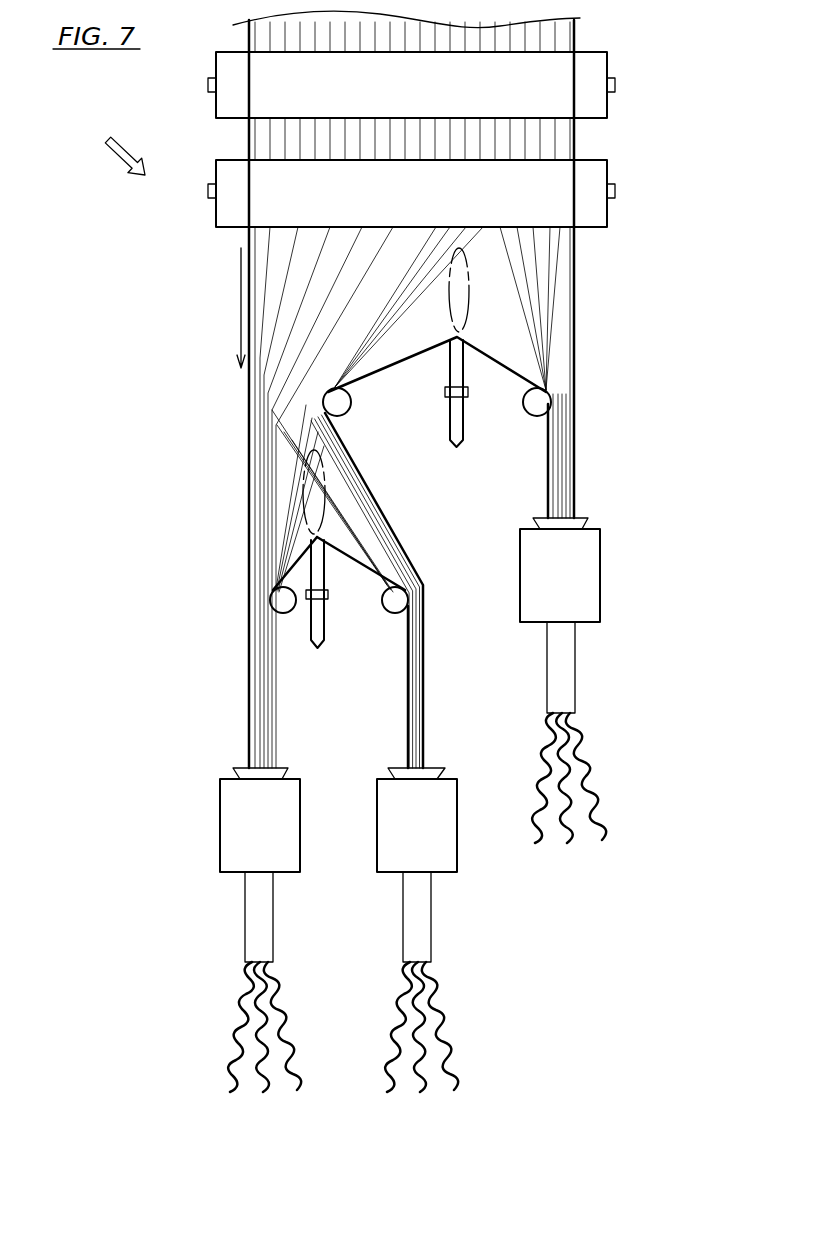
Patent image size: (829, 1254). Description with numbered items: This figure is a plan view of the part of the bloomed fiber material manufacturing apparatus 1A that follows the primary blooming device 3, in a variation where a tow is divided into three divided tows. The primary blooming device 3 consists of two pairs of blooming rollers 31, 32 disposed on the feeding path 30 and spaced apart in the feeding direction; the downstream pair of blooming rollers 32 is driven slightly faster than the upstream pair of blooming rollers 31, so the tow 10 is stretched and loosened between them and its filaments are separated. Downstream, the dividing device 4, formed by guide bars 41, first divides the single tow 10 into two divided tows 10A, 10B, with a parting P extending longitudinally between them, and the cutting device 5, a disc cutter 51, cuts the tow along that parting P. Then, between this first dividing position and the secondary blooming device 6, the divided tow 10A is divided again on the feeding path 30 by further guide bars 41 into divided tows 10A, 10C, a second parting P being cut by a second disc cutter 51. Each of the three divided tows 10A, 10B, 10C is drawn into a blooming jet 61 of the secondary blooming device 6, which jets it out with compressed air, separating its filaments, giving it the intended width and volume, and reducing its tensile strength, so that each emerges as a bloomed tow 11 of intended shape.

The bloomed fiber material manufacturing apparatus 1A is at (115, 144).
The primary blooming device 3 is at (488, 130).
The pair of blooming rollers 31 is at (608, 62).
The pair of blooming rollers 32 is at (608, 170).
The tow 10 is at (575, 243).
The feeding path 30 is at (242, 298).
The divided tow 10A is at (248, 439).
The divided tow 10B is at (575, 473).
The divided tow 10C is at (425, 670).
The parting P is at (469, 290).
The dividing device 4 is at (214, 574).
The cutting device 5 is at (473, 466).
The guide bar 41 is at (350, 410).
The disc cutter 51 is at (465, 420).
The secondary blooming device 6 is at (467, 740).
The blooming jet 61 is at (600, 590).
The bloomed tow 11 is at (235, 1025).